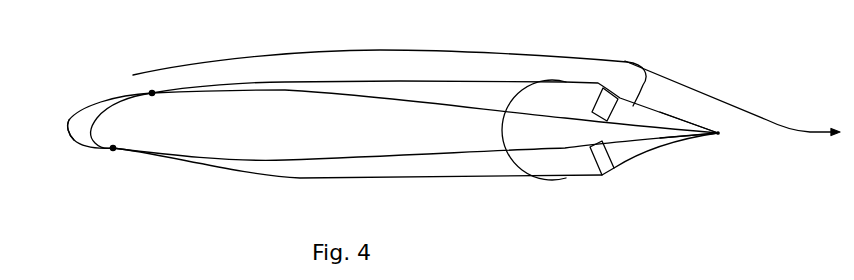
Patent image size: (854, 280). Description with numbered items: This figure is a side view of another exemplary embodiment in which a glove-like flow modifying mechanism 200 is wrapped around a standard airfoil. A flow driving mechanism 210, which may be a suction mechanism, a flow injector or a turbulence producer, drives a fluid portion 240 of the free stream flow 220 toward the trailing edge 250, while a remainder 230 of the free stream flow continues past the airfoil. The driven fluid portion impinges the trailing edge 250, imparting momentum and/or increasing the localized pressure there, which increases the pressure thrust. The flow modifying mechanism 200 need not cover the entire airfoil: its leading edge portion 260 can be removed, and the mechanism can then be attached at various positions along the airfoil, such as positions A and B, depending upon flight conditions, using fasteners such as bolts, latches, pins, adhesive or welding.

The flow modifying mechanism 200 is at (68, 88).
The flow driving mechanism 210 is at (605, 160).
The free stream flow 220 is at (553, 57).
The remainder of the free stream flow 230 is at (690, 88).
The fluid portion 240 is at (631, 95).
The trailing edge 250 is at (675, 139).
The leading edge portion 260 is at (73, 137).